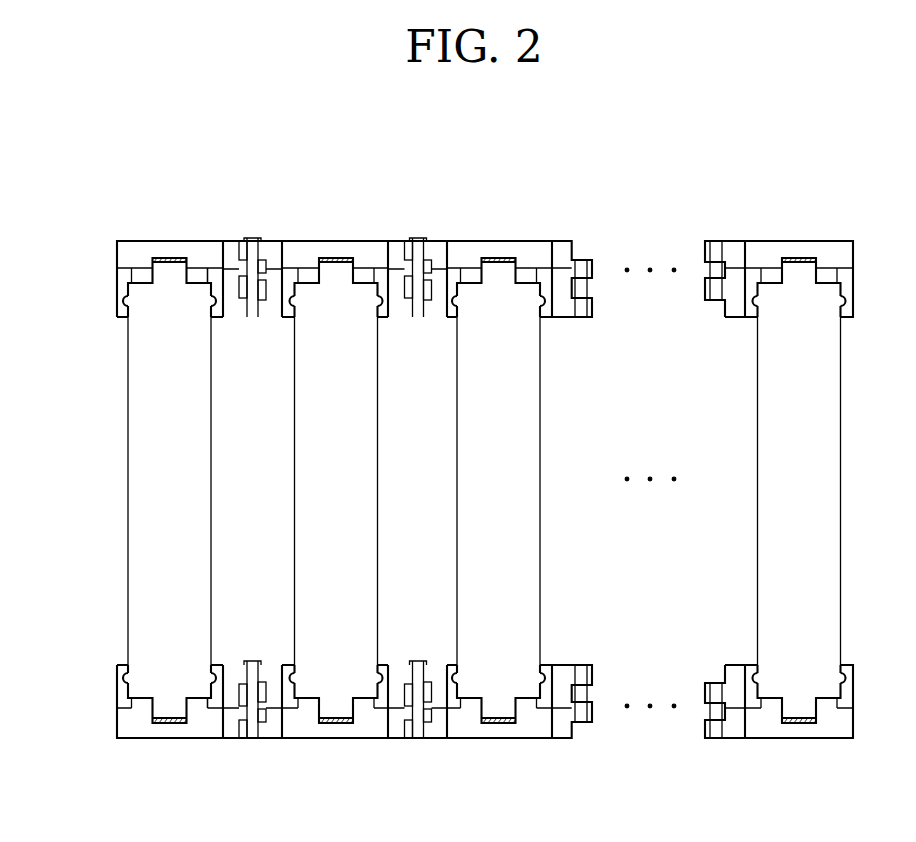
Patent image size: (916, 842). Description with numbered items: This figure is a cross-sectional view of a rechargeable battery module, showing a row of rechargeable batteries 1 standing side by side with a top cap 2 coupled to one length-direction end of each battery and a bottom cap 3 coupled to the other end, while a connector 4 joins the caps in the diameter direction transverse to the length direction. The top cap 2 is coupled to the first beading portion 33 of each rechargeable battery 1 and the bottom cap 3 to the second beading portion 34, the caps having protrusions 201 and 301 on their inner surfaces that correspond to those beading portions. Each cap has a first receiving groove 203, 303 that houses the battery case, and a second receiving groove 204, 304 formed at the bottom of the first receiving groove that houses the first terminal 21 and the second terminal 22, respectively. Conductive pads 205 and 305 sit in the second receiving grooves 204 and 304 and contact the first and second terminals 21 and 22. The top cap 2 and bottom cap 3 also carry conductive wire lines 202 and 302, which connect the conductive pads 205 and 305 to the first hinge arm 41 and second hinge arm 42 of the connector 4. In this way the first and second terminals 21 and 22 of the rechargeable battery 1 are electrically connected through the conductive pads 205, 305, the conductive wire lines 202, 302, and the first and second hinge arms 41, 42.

The rechargeable battery 1 is at (128, 491).
The top cap 2 is at (130, 249).
The bottom cap 3 is at (128, 730).
The connector 4 is at (335, 498).
The first terminal 21 is at (165, 273).
The second terminal 22 is at (165, 708).
The first beading portion 33 is at (122, 301).
The second beading portion 34 is at (125, 673).
The first hinge arm 41 is at (232, 730).
The second hinge arm 42 is at (268, 728).
The protrusion 201 is at (213, 302).
The conductive wire line 202 is at (200, 268).
The first receiving groove 203 is at (847, 297).
The second receiving groove 204 is at (807, 268).
The conductive pad 205 is at (170, 256).
The protrusion 301 is at (217, 675).
The conductive wire line 302 is at (202, 715).
The first receiving groove 303 is at (833, 690).
The second receiving groove 304 is at (812, 710).
The conductive pad 305 is at (170, 725).